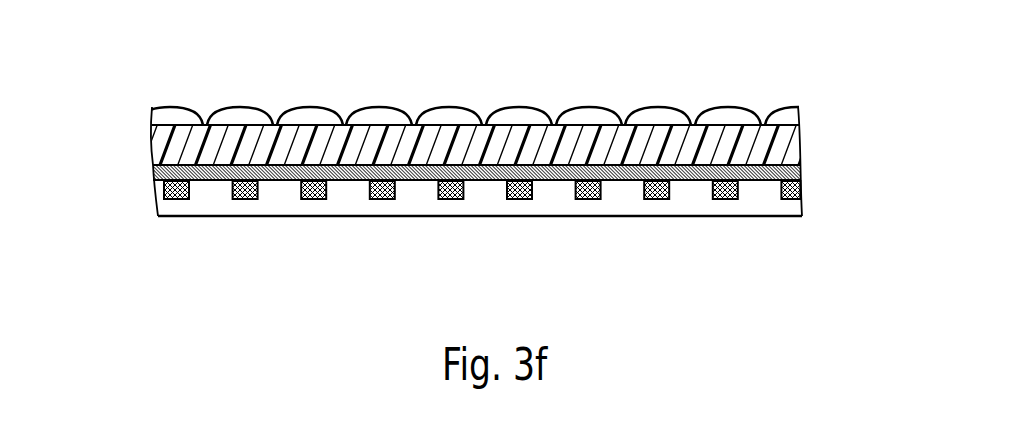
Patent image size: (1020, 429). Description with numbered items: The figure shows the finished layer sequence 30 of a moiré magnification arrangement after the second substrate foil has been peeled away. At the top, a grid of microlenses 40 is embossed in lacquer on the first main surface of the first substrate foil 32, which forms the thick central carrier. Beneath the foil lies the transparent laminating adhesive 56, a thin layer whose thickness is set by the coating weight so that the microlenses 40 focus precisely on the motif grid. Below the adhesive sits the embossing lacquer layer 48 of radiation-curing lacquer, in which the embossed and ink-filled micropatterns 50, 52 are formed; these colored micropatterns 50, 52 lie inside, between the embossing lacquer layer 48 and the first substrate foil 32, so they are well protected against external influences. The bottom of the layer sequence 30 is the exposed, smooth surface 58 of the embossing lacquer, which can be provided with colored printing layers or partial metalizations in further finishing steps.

The moiré magnification arrangement 30 is at (112, 122).
The first substrate foil 32 is at (782, 145).
The microlenses 40 is at (517, 113).
The embossing lacquer layer 48 is at (511, 257).
The micropatterns 50 is at (482, 227).
The micropatterns 52 is at (450, 200).
The laminating adhesive 56 is at (785, 175).
The smooth surface 58 is at (630, 236).